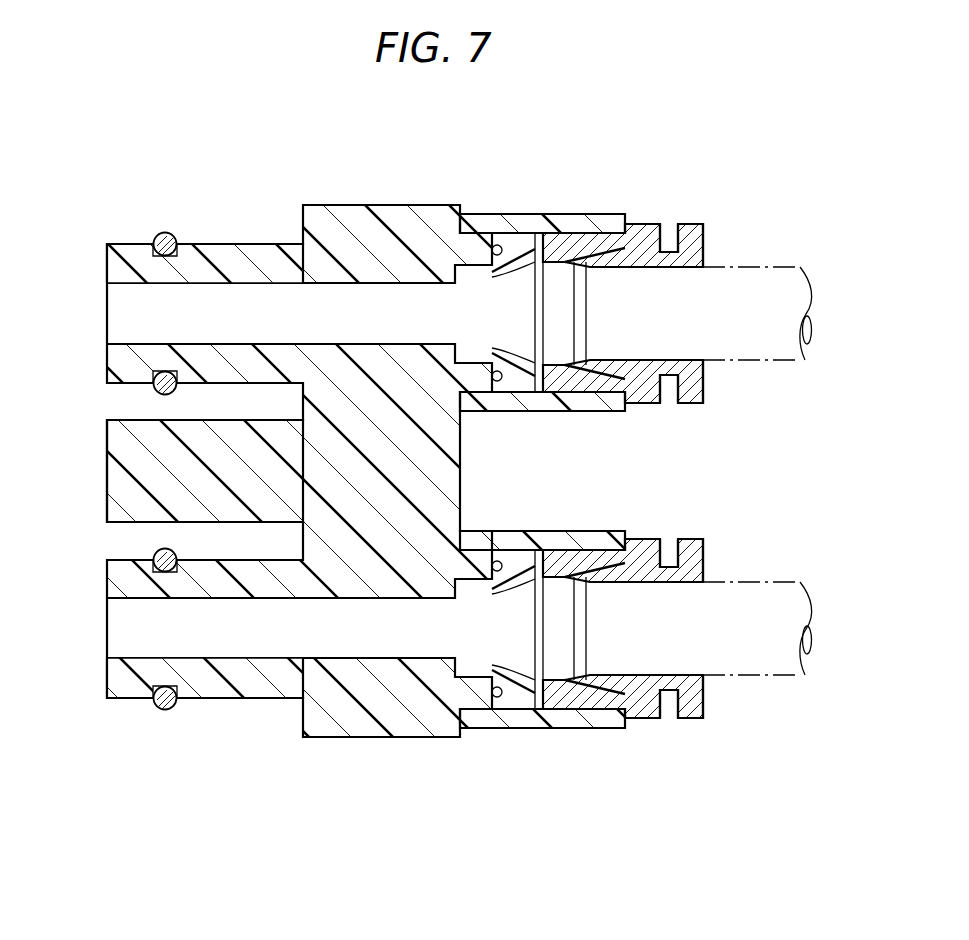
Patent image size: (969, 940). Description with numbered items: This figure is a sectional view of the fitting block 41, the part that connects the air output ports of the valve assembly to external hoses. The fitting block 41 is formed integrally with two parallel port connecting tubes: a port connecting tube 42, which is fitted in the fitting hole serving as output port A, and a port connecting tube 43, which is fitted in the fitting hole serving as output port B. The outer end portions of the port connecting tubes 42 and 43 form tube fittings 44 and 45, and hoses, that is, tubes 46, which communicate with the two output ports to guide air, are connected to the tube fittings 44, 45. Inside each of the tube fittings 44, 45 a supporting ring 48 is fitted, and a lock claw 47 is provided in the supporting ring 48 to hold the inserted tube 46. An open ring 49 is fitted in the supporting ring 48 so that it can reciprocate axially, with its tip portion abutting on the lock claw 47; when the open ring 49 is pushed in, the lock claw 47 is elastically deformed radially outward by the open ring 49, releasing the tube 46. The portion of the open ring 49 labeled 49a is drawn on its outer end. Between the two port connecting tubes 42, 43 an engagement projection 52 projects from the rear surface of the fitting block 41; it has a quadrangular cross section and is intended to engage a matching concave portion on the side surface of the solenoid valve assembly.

The fitting block 41 is at (376, 222).
The port connecting tube 42 is at (207, 682).
The port connecting tube 43 is at (232, 262).
The tube fitting 44 is at (517, 723).
The tube fitting 45 is at (550, 222).
The tube 46 is at (778, 262).
The lock claw 47 is at (577, 392).
The supporting ring 48 is at (645, 228).
The open ring 49 is at (667, 376).
The flange 49a is at (690, 233).
The engagement projection 52 is at (123, 472).